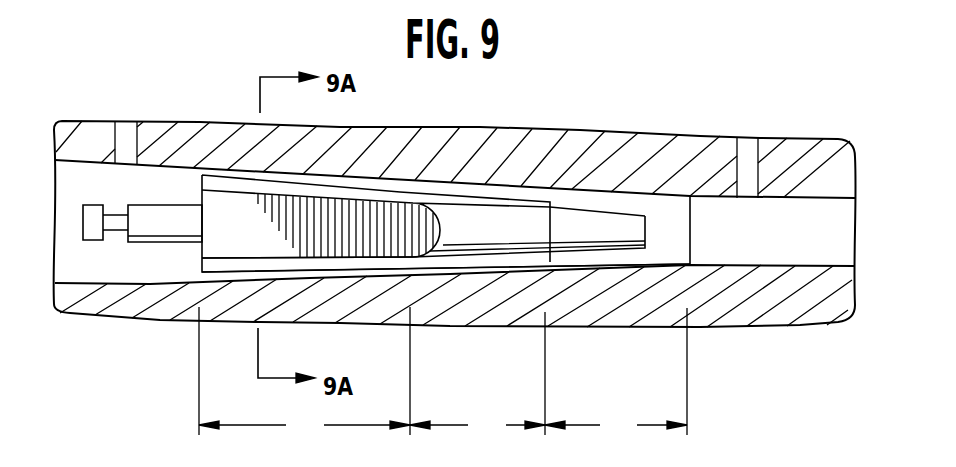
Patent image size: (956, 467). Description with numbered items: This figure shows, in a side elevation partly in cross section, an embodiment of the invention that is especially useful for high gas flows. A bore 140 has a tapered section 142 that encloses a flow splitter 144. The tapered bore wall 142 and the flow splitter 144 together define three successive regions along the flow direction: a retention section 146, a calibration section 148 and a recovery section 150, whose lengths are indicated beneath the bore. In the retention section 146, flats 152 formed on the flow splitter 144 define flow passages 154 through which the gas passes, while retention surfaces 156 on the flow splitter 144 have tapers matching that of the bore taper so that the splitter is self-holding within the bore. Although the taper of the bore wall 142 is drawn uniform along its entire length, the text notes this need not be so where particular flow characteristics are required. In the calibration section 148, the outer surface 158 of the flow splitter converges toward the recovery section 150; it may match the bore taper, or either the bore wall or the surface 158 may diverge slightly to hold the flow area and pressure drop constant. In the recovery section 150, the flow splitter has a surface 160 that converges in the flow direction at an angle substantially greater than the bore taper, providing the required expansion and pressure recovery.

The bore 140 is at (157, 160).
The tapered section 142 is at (358, 174).
The flow splitter 144 is at (463, 243).
The retention section 146 is at (304, 373).
The calibration section 148 is at (477, 375).
The recovery section 150 is at (616, 373).
The flats 152 is at (215, 243).
The flow passages 154 is at (375, 262).
The retention surfaces 156 is at (342, 263).
The outer surface 158 is at (522, 199).
The surface 160 is at (622, 213).